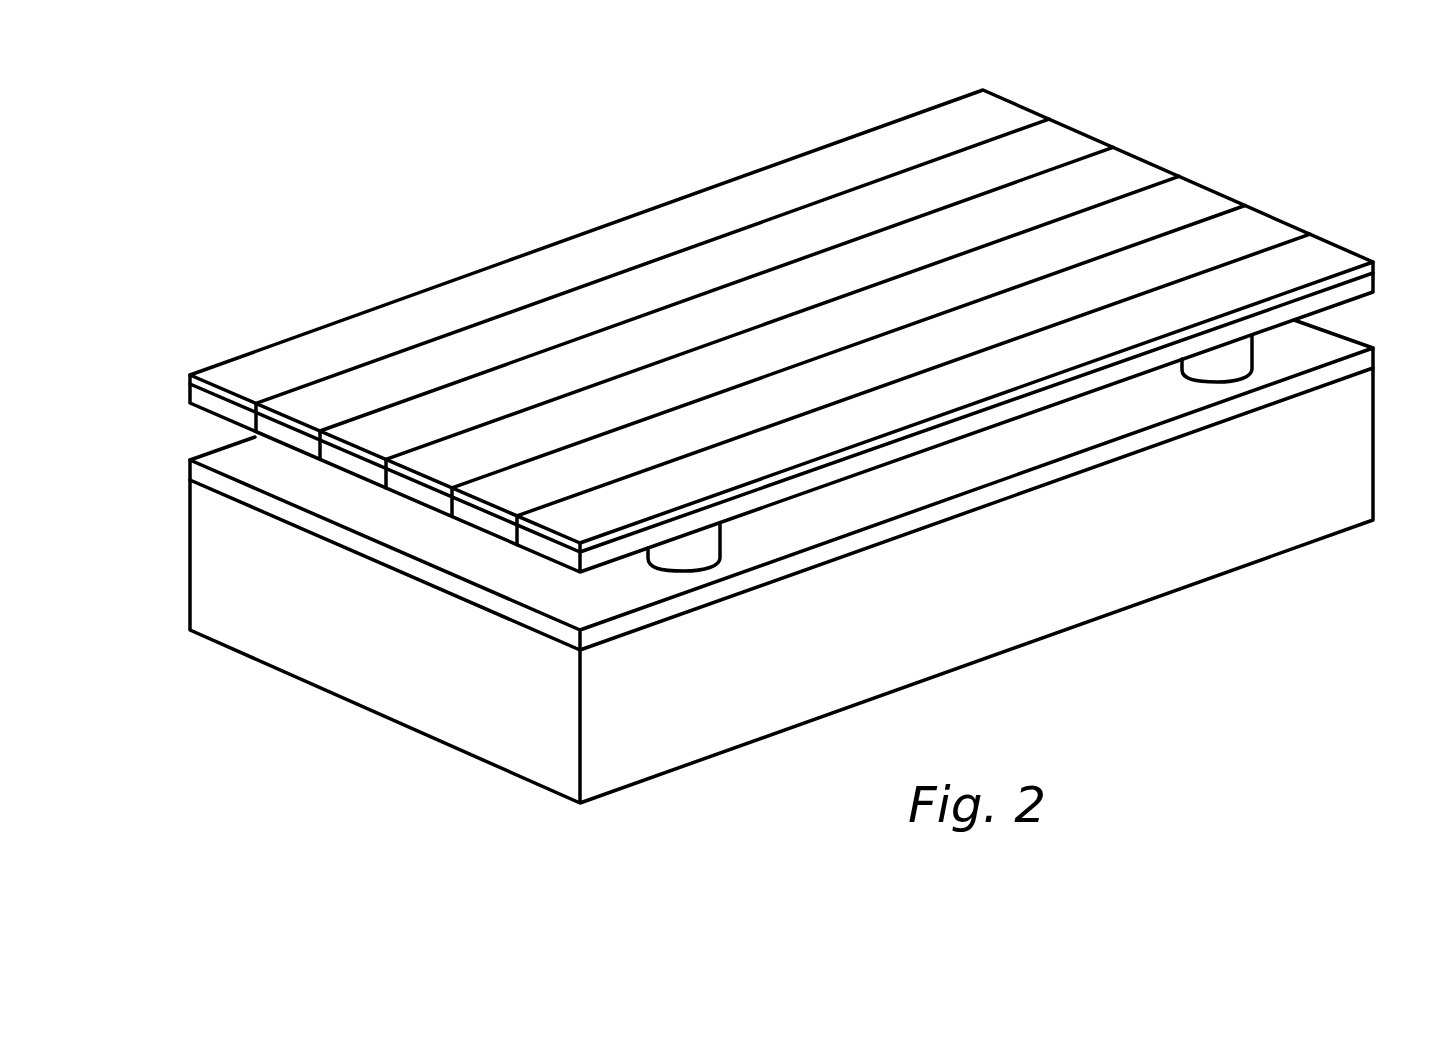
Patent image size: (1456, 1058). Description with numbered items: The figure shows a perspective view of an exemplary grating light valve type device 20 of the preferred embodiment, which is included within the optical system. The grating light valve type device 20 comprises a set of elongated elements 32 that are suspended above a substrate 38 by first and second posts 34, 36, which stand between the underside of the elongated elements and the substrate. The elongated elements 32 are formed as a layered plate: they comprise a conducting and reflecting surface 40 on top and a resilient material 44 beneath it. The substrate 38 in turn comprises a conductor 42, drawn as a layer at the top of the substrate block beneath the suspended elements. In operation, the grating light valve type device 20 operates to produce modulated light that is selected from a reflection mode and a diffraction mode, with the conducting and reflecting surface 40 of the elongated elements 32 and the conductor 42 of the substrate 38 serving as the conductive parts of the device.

The grating light valve type device 20 is at (205, 345).
The elongated elements 32 is at (643, 248).
The first post 34 is at (683, 548).
The second post 36 is at (1215, 362).
The substrate 38 is at (1335, 457).
The conducting and reflecting surface 40 is at (190, 377).
The conductor 42 is at (1020, 484).
The resilient material 44 is at (190, 394).